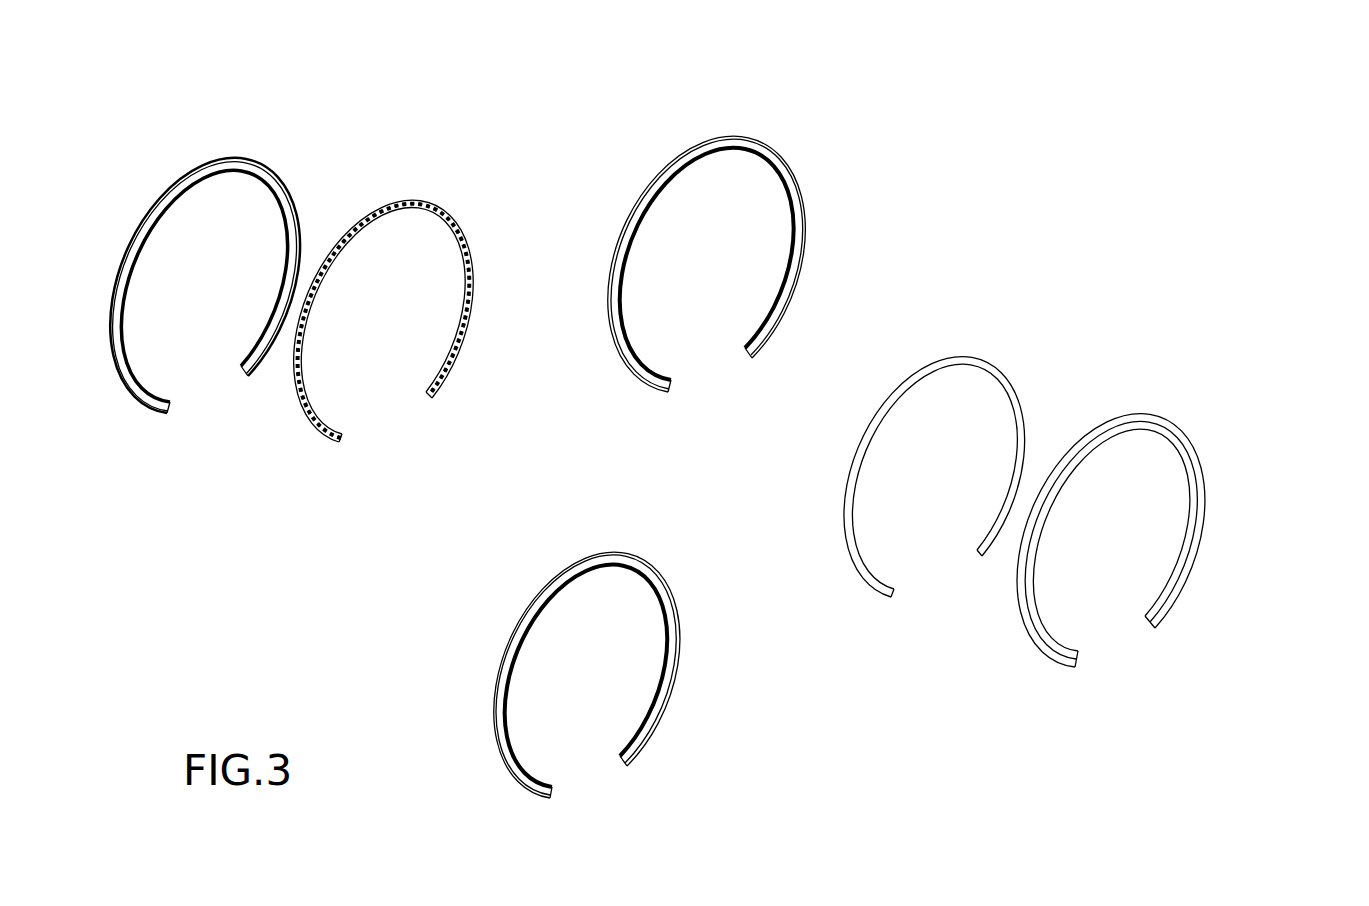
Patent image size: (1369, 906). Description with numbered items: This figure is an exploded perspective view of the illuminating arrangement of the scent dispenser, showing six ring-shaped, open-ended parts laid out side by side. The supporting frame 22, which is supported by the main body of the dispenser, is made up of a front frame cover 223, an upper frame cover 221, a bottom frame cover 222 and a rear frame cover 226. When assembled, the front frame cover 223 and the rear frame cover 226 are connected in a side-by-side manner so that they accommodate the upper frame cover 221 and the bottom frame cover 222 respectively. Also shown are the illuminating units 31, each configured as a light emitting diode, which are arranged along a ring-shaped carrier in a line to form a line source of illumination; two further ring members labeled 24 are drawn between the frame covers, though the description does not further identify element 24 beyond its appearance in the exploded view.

The supporting frame 22 is at (308, 78).
The front frame cover 223 is at (235, 160).
The snap ring 24 is at (395, 205).
The illuminating unit 31 is at (470, 245).
The upper frame cover 221 is at (782, 190).
The rear frame cover 226 is at (1127, 428).
The bottom frame cover 222 is at (640, 727).